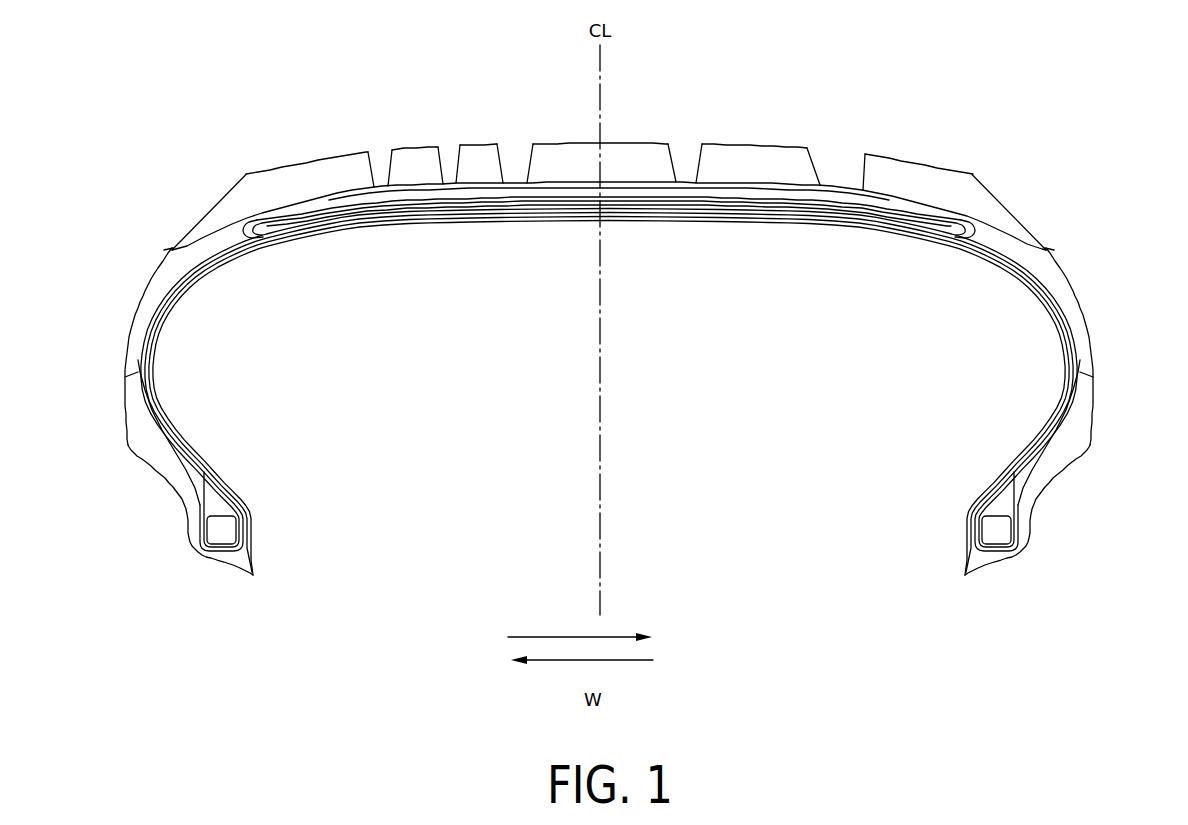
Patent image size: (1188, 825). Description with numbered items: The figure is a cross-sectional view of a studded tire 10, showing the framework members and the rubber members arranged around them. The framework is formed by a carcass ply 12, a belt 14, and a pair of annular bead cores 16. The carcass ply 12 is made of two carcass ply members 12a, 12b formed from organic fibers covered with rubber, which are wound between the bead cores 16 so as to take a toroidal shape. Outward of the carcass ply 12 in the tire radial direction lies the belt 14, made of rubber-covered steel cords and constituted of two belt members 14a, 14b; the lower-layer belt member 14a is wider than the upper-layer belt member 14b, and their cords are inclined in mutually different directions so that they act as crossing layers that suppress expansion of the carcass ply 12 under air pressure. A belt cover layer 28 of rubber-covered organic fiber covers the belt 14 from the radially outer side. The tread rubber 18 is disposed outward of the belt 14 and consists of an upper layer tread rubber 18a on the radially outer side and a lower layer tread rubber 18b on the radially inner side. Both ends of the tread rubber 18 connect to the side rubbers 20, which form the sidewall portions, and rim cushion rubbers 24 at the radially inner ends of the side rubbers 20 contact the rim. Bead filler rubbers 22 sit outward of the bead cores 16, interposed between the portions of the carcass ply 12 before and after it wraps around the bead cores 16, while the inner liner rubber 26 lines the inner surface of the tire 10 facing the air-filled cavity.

The studded tire 10 is at (1003, 147).
The carcass ply 12 is at (930, 262).
The carcass ply member 12a is at (1040, 307).
The carcass ply member 12b is at (1023, 280).
The belt 14 is at (750, 101).
The belt member 14a is at (766, 207).
The belt member 14b is at (805, 204).
The bead core 16 is at (222, 530).
The tread rubber 18 is at (1088, 183).
The upper layer tread rubber 18a is at (968, 189).
The lower layer tread rubber 18b is at (968, 223).
The side rubber 20 is at (147, 308).
The bead filler rubber 22 is at (210, 493).
The rim cushion rubber 24 is at (147, 432).
The inner liner rubber 26 is at (561, 220).
The belt cover layer 28 is at (288, 208).